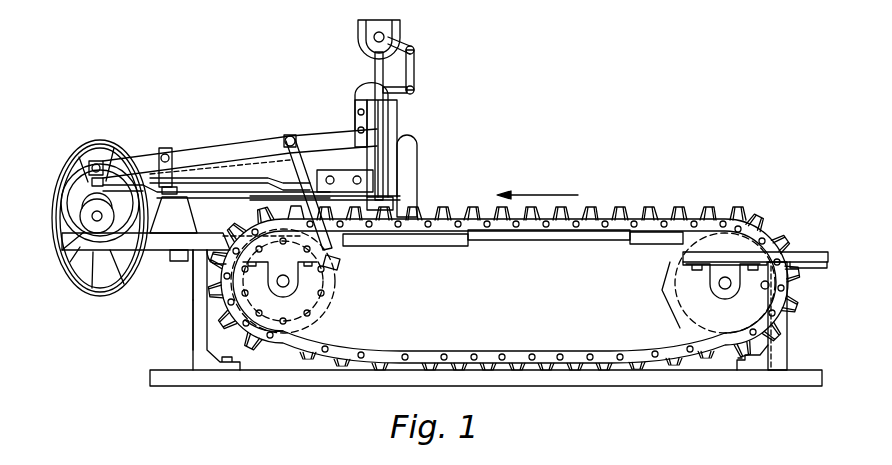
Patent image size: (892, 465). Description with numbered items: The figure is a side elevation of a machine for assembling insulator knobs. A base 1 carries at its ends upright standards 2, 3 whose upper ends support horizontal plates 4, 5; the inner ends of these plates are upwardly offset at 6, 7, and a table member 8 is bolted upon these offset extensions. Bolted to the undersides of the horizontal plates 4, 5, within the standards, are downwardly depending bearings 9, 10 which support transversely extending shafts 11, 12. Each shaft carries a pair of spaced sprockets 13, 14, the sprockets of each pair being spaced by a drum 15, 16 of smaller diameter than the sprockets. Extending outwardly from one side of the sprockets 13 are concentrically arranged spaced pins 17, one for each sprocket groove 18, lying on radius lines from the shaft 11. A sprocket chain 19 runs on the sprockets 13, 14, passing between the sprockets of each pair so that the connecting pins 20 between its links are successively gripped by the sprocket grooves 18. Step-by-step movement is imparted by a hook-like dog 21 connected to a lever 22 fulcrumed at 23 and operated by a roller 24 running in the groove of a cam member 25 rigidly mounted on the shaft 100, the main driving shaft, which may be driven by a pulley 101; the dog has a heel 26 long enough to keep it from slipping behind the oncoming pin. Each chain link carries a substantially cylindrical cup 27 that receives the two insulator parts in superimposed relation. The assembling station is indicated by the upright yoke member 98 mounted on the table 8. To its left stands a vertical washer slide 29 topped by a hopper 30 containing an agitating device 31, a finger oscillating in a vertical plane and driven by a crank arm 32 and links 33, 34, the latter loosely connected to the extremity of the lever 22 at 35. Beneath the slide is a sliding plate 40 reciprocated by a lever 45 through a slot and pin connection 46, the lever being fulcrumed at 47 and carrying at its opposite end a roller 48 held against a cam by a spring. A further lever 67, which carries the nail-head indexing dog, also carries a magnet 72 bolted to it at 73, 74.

The base 1 is at (276, 381).
The upright standard 2 is at (200, 316).
The upright standard 3 is at (775, 341).
The horizontal plate 4 is at (176, 262).
The horizontal plate 5 is at (802, 253).
The offset extension 6 is at (416, 246).
The offset extension 7 is at (645, 244).
The table member 8 is at (528, 241).
The bearing 9 is at (325, 298).
The bearing 10 is at (712, 287).
The shaft 11 is at (205, 290).
The shaft 12 is at (771, 290).
The pair of sprockets 13 is at (330, 306).
The pair of sprockets 14 is at (690, 322).
The drum 15 is at (223, 325).
The drum 16 is at (668, 283).
The pins 17 is at (257, 316).
The sprocket groove 18 is at (340, 264).
The sprocket chain 19 is at (468, 356).
The connecting pins 20 is at (278, 345).
The hook-like dog 21 is at (340, 285).
The lever 22 is at (254, 145).
The fulcrum 23 is at (166, 150).
The roller 24 is at (102, 163).
The cam member 25 is at (80, 165).
The heel 26 is at (300, 283).
The cup 27 is at (470, 207).
The vertical washer slide 29 is at (376, 66).
The hopper 30 is at (360, 38).
The agitating device 31 is at (379, 30).
The crank arm 32 is at (412, 46).
The link 33 is at (415, 71).
The link 34 is at (362, 91).
The loose connection 35 is at (358, 131).
The sliding plate 40 is at (392, 203).
The lever 45 is at (229, 176).
The slot and pin connection 46 is at (392, 184).
The fulcrum 47 is at (189, 201).
The roller 48 is at (104, 195).
The lever 67 is at (280, 184).
The magnet 72 is at (345, 176).
The bolt 73 is at (328, 177).
The bolt 74 is at (356, 176).
The upright yoke member 98 is at (417, 166).
The shaft 100 is at (97, 222).
The pulley 101 is at (105, 142).